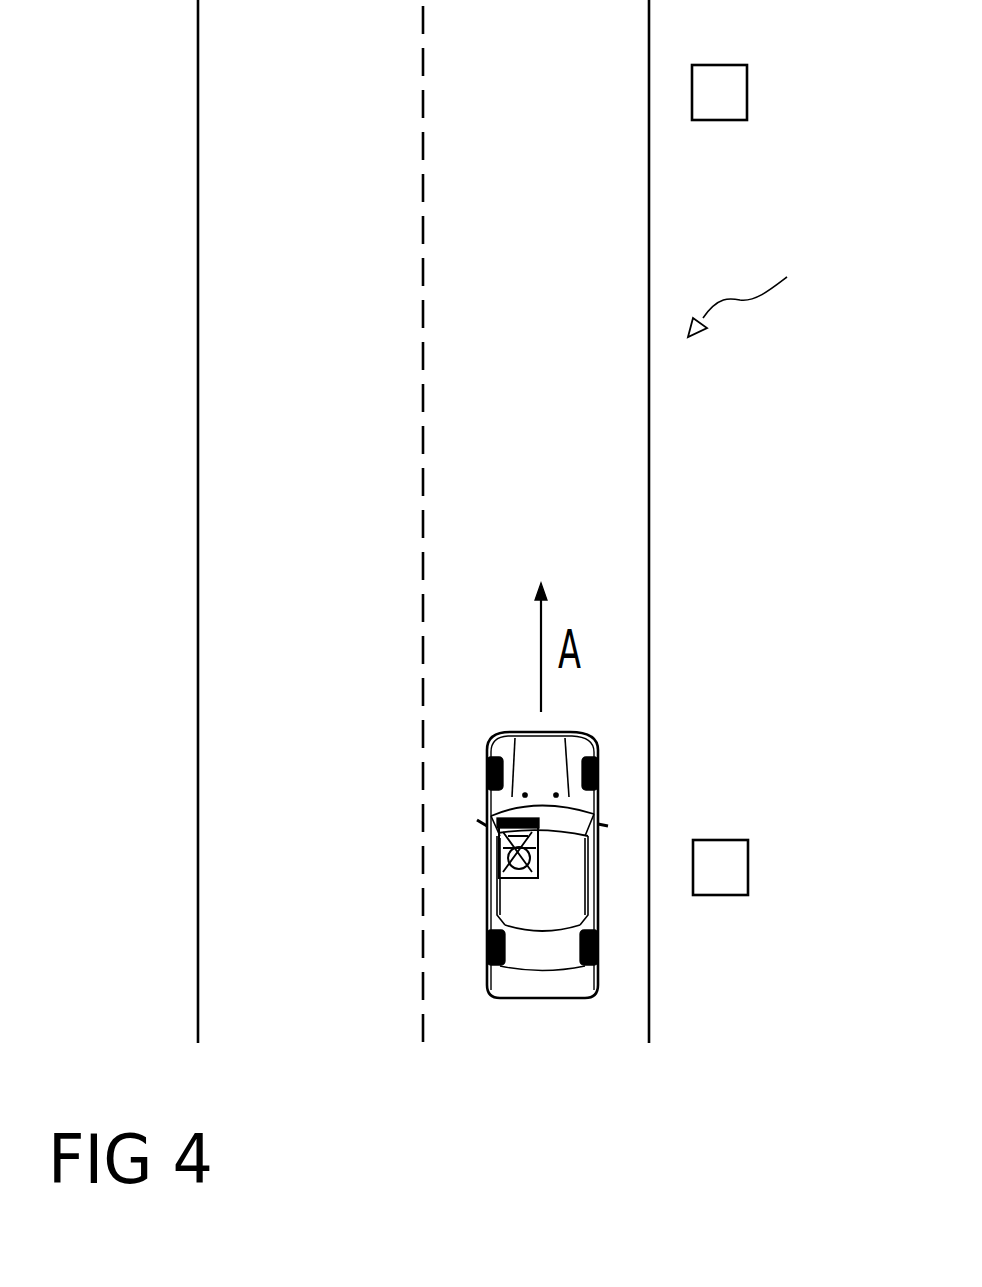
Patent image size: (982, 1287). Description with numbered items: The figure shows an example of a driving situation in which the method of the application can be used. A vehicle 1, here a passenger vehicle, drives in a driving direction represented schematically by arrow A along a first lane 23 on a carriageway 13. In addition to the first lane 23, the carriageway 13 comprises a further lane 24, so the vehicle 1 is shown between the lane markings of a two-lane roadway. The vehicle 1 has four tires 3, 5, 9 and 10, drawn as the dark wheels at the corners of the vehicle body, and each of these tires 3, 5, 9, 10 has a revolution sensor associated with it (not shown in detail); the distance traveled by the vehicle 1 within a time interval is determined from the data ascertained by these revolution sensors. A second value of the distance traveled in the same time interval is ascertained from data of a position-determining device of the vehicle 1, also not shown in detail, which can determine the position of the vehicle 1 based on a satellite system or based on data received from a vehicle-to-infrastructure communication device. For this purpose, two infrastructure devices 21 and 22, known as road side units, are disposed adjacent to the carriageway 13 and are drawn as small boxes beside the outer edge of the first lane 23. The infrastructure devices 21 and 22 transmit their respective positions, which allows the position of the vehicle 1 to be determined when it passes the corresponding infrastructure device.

The vehicle 1 is at (538, 917).
The tire 3 is at (485, 778).
The tire 5 is at (598, 765).
The tire 9 is at (487, 950).
The tire 10 is at (598, 940).
The carriageway 13 is at (754, 287).
The infrastructure device 21 is at (735, 875).
The infrastructure device 22 is at (735, 93).
The first lane 23 is at (623, 478).
The further lane 24 is at (222, 486).